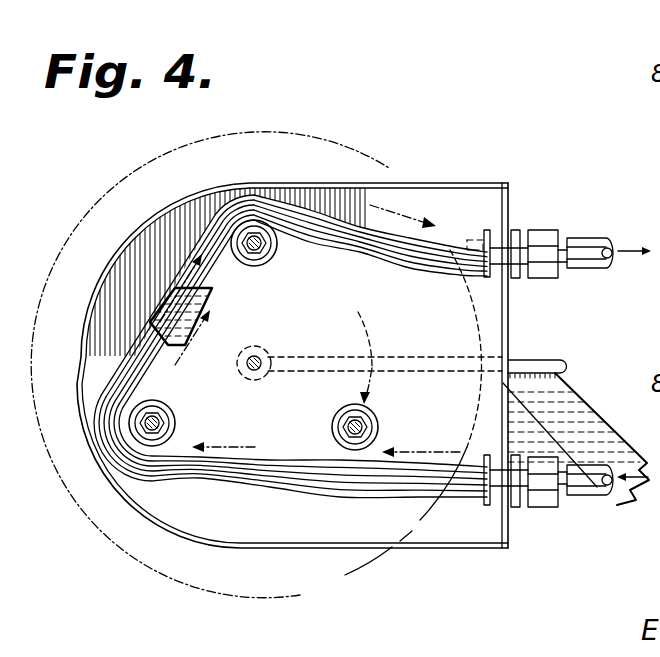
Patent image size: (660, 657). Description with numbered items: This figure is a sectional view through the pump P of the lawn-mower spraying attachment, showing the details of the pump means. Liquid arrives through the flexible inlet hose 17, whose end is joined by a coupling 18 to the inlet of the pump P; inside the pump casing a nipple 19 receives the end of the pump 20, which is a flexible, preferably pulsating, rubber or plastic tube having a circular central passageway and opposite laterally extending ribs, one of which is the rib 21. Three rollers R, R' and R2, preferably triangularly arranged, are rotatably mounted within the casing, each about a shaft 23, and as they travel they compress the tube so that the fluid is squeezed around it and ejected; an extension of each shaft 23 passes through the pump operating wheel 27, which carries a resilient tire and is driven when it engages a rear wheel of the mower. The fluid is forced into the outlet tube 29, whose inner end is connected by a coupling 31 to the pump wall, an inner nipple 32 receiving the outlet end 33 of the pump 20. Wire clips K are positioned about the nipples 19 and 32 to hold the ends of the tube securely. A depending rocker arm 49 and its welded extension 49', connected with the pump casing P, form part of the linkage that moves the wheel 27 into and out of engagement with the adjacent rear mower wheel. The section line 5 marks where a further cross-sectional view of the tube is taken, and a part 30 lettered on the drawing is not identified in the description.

The section line 5- 5 is at (223, 118).
The pump casing P is at (456, 188).
The pump 20 is at (378, 228).
The laterally extending rib 21 is at (376, 491).
The shaft 23 is at (254, 266).
The pump operating wheel 27 is at (338, 586).
The roller R2 is at (274, 252).
The roller R' is at (165, 412).
The roller R is at (339, 409).
The wire clips K is at (486, 234).
The outlet end 33 is at (488, 233).
The inner nipple 32 is at (477, 280).
The coupling 31 is at (544, 232).
The outlet tube 29 is at (590, 240).
The cable 30 is at (570, 270).
The nipple 19 is at (480, 500).
The coupling 18 is at (548, 500).
The flexible inlet hose 17 is at (586, 497).
The rocker arm 49 is at (576, 439).
The welded extension 49' is at (541, 349).